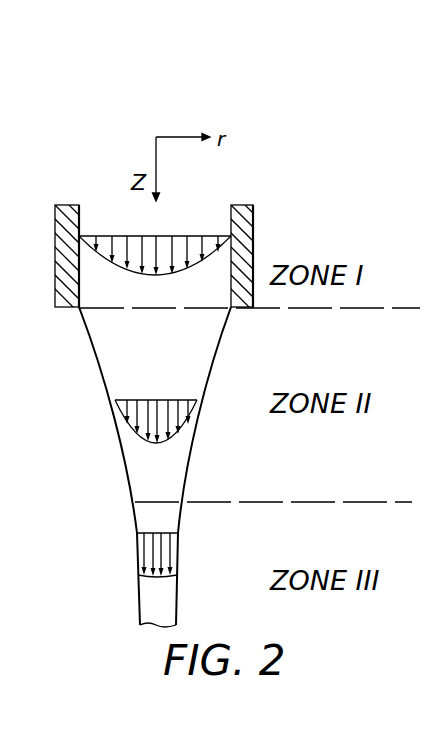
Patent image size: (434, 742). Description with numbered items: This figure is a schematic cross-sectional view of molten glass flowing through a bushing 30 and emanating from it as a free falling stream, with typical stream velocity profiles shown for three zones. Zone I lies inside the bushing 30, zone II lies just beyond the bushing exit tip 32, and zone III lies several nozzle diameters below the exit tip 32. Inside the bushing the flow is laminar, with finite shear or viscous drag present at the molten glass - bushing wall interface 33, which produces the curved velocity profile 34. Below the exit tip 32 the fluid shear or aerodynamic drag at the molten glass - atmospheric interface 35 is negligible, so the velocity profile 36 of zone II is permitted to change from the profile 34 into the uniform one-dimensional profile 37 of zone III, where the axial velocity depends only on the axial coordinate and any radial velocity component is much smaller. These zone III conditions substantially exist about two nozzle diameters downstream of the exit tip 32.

The bushing 30 is at (257, 222).
The bushing exit tip 32 is at (233, 310).
The molten glass - bushing wall interface 33 is at (80, 236).
The velocity profile 34 is at (133, 272).
The molten glass - atmospheric interface 35 is at (103, 378).
The velocity profile 36 is at (163, 443).
The uniform one-dimensional profile 37 is at (160, 577).